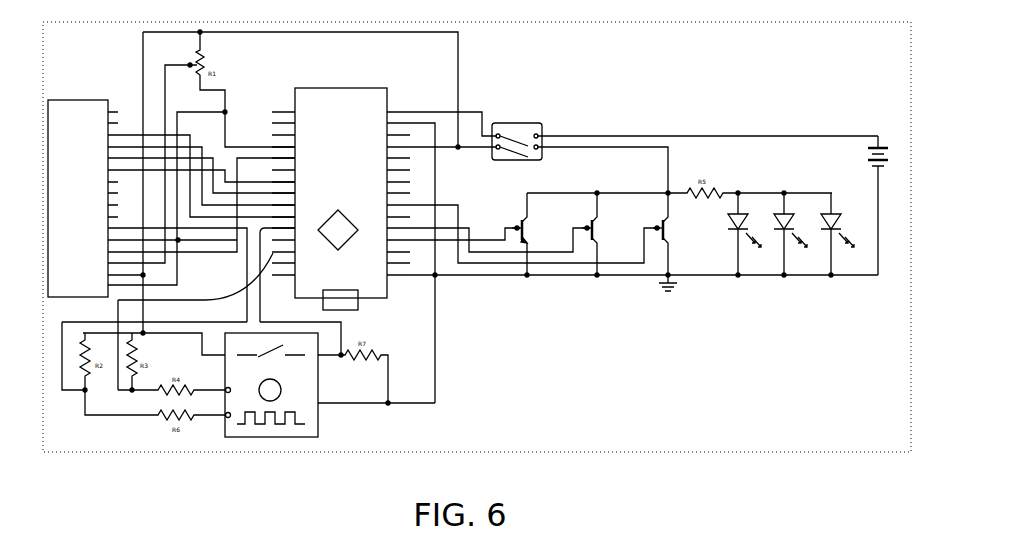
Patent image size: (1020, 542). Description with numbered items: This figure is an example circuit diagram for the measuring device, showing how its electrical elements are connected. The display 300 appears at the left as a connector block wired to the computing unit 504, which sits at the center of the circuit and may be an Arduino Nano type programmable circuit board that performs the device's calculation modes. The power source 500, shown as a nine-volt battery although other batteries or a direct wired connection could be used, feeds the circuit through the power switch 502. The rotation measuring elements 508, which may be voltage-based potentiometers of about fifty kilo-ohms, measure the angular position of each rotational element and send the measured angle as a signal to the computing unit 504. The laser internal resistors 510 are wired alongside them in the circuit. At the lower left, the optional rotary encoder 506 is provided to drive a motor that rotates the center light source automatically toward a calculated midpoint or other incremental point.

The display 300 is at (48, 197).
The power source 500 is at (892, 136).
The power switch 502 is at (518, 108).
The computing unit 504 is at (355, 177).
The rotary encoder 506 is at (318, 418).
The rotation measuring elements 508 is at (685, 302).
The laser internal resistors 510 is at (837, 288).